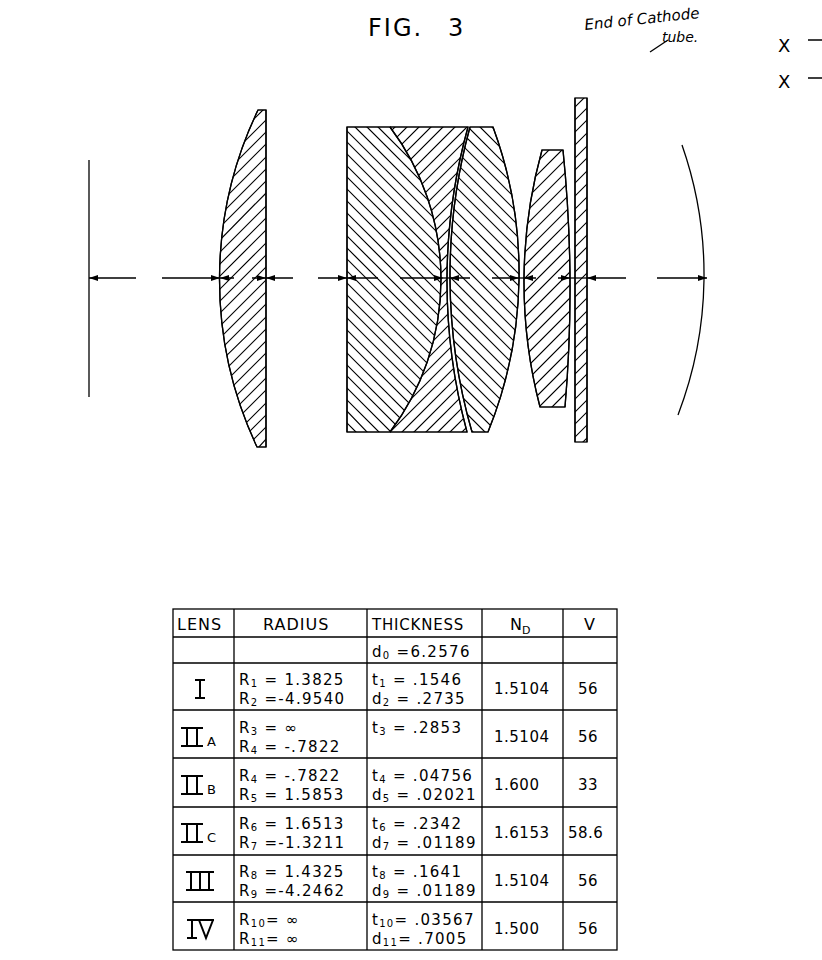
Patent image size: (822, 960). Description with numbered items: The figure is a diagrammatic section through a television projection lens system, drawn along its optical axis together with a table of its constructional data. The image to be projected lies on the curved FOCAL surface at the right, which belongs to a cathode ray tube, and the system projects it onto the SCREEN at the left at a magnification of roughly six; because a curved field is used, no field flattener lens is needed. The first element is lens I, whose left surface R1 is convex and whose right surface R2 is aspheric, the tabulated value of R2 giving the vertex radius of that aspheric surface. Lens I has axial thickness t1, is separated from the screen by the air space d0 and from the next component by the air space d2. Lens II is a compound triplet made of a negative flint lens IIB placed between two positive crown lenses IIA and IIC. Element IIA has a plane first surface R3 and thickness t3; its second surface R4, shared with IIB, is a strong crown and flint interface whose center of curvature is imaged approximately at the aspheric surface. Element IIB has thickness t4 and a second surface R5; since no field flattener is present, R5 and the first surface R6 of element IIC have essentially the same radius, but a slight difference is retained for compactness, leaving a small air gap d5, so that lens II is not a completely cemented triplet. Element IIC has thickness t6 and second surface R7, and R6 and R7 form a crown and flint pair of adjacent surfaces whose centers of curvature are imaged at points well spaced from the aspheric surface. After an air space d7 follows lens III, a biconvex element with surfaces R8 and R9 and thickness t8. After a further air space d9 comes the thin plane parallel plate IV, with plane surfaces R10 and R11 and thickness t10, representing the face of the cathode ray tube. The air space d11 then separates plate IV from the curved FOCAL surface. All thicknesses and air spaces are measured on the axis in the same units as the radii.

The lens I is at (258, 114).
The lens II is at (340, 108).
The positive crown lens IIA is at (352, 418).
The negative flint lens IIB is at (414, 420).
The positive crown lens IIC is at (488, 438).
The lens III is at (553, 150).
The plane parallel lens IV is at (588, 123).
The first surface of lens I R1 is at (240, 403).
The aspheric surface of lens I R2 is at (266, 400).
The first surface of lens IIA R3 is at (347, 360).
The crown and flint interface R4 is at (396, 418).
The second surface of lens IIB R5 is at (420, 420).
The first surface of lens IIC R6 is at (478, 436).
The second surface of lens IIC R7 is at (496, 420).
The first surface of lens III R8 is at (536, 408).
The second surface of lens III R9 is at (562, 410).
The first surface of plate IV R10 is at (578, 442).
The second surface of plate IV R11 is at (588, 412).
The distance from screen to lens I d0 is at (154, 279).
The thickness of lens I t1 is at (243, 279).
The air space between lens I and lens II d2 is at (306, 279).
The thickness of lens IIA t3 is at (395, 279).
The thickness of lens IIB t4 is at (446, 270).
The air space between IIB and IIC d5 is at (452, 274).
The thickness of lens IIC t6 is at (484, 279).
The air space between lens II and lens III d7 is at (520, 222).
The thickness of lens III t8 is at (547, 279).
The air space between lens III and plate IV d9 is at (577, 272).
The thickness of plate IV t10 is at (583, 282).
The air space between plate IV and focal surface d11 is at (647, 279).
The screen SCREEN is at (88, 385).
The focal surface FOCAL is at (690, 390).